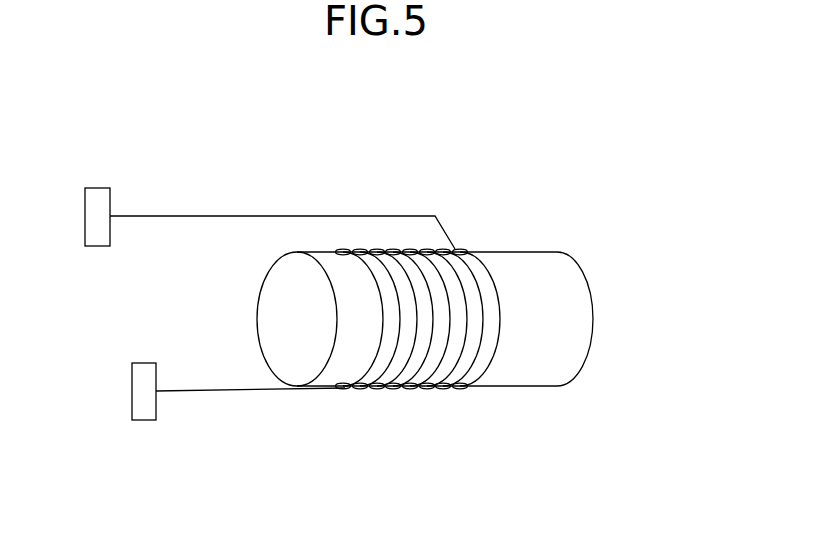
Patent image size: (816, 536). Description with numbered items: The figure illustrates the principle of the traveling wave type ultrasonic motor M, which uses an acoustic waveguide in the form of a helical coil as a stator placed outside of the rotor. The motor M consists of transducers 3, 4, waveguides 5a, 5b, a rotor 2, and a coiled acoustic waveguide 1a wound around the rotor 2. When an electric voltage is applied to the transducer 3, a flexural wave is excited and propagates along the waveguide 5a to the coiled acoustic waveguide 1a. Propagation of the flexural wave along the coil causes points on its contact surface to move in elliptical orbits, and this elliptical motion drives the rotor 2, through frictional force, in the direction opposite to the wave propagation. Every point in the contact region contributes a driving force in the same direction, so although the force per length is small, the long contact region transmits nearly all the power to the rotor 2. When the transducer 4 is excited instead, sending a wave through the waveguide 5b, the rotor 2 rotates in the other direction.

The traveling wave type ultrasonic motor M is at (466, 296).
The rotor 2 is at (570, 306).
The coiled acoustic waveguide 1a is at (428, 399).
The waveguide 5a is at (273, 210).
The waveguide 5b is at (258, 395).
The transducer 3 is at (98, 187).
The transducer 4 is at (143, 423).